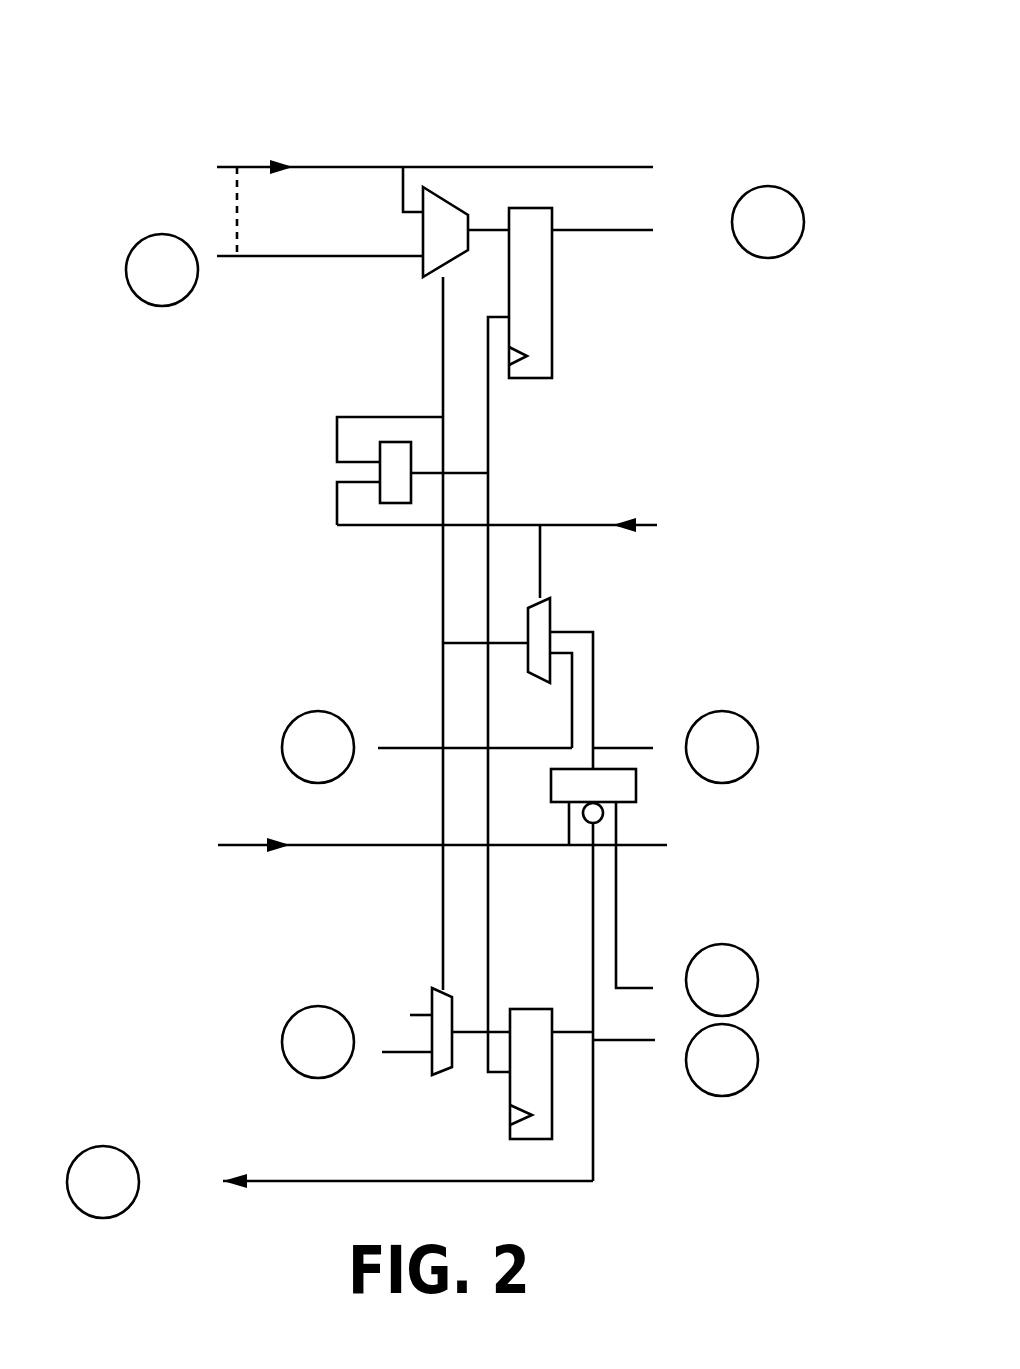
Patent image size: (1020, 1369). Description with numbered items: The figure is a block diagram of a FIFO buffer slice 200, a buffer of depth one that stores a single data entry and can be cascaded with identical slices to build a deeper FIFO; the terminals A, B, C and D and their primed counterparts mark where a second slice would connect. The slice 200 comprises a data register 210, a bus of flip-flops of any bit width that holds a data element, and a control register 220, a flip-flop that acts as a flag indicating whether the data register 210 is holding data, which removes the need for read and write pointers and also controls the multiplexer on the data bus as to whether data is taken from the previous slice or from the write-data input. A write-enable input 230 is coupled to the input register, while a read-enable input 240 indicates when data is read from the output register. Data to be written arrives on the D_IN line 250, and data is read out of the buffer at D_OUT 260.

The FIFO buffer slice 200 is at (668, 97).
The data register 210 is at (552, 338).
The control register 220 is at (508, 1107).
The write-enable (WE) input 230 is at (178, 843).
The read-enable (RE) input 240 is at (667, 527).
The D_IN line 250 is at (237, 167).
The D_OUT 260 is at (668, 230).